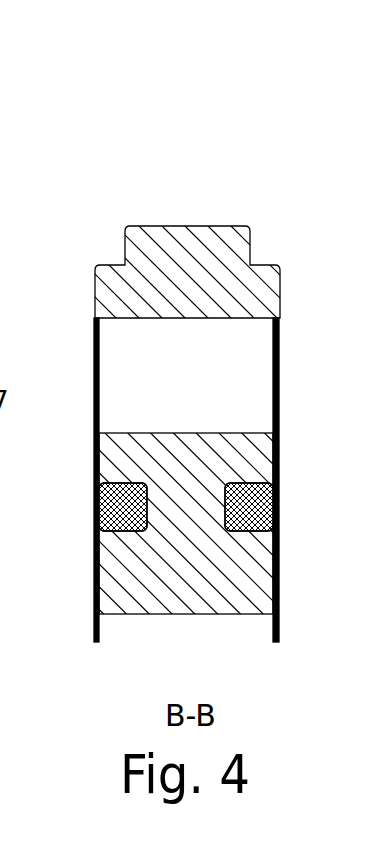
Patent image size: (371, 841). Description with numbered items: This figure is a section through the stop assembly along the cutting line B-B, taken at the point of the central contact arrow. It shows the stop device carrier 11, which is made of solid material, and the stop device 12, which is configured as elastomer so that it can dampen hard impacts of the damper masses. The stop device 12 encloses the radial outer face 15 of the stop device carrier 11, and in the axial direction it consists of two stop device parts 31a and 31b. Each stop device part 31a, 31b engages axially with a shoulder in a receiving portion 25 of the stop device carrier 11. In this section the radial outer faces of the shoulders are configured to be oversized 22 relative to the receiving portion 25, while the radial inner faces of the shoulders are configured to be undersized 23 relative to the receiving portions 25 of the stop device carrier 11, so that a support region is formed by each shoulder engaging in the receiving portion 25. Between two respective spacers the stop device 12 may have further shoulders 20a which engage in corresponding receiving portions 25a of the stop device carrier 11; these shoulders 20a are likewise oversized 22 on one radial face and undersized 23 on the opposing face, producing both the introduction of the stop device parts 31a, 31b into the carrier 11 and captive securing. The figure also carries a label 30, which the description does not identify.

The stop device carrier 11 is at (279, 590).
The stop device 12 is at (99, 507).
The radial outer face 15 is at (176, 225).
The further shoulder 20a is at (99, 490).
The oversized face 22 is at (123, 481).
The undersized face 23 is at (130, 534).
The receiving portion 25 is at (279, 530).
The receiving portion 25a is at (109, 534).
The chamber 30 is at (243, 362).
The stop device part 31a is at (98, 485).
The stop device part 31b is at (278, 486).